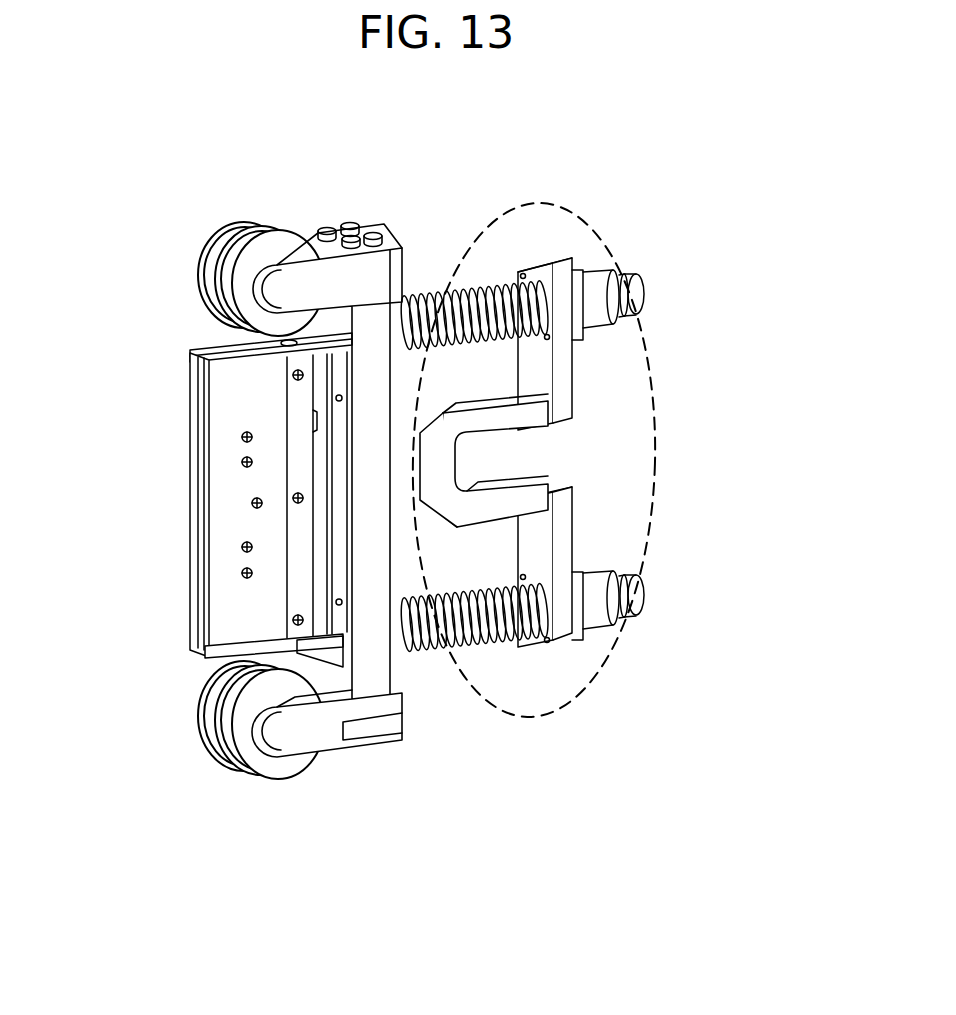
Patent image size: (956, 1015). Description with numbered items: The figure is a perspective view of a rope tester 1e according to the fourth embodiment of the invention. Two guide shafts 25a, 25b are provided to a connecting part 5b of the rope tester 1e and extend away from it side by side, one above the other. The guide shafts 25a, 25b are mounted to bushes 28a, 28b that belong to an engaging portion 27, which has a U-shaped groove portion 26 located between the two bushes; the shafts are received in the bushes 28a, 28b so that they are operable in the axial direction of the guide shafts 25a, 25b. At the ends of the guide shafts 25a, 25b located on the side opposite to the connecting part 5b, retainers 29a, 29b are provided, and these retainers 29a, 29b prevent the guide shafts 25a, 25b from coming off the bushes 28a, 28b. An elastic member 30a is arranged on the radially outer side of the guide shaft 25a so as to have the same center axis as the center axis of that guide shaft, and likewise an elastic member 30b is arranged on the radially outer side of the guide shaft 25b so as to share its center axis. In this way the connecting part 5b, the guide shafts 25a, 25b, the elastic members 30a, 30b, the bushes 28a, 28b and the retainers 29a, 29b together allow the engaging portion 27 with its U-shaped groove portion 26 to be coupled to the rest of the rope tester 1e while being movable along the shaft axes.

The rope tester 1e is at (116, 154).
The connecting part 5b is at (377, 333).
The guide shaft 25a is at (634, 270).
The guide shaft 25b is at (620, 607).
The U-shaped groove portion 26 is at (462, 480).
The engaging portion 27 is at (522, 717).
The bush 28a is at (593, 283).
The bush 28b is at (603, 603).
The retainer 29a is at (645, 287).
The retainer 29b is at (642, 610).
The elastic member 30a is at (507, 282).
The elastic member 30b is at (422, 653).